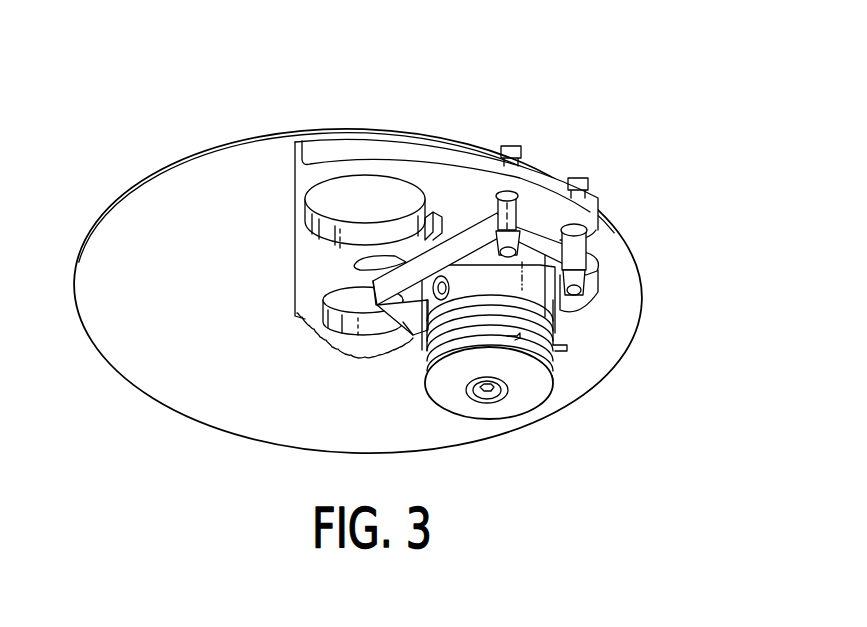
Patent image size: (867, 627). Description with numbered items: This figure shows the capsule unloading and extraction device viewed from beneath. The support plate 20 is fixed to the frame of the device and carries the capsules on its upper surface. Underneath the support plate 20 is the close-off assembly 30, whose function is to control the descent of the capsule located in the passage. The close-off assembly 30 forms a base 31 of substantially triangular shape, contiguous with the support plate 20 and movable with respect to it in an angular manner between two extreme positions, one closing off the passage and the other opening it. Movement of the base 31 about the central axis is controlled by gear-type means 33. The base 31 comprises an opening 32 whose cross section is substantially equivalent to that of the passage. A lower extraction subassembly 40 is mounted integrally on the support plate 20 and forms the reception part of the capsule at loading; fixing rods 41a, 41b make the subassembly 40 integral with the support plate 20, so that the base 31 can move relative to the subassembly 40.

The support plate 20 is at (644, 248).
The close-off assembly 30 is at (454, 250).
The base 31 is at (459, 185).
The opening 32 is at (382, 181).
The gear-type means 33 is at (306, 341).
The lower extraction subassembly 40 is at (555, 401).
The fixing rod 41a is at (600, 213).
The fixing rod 41b is at (413, 344).